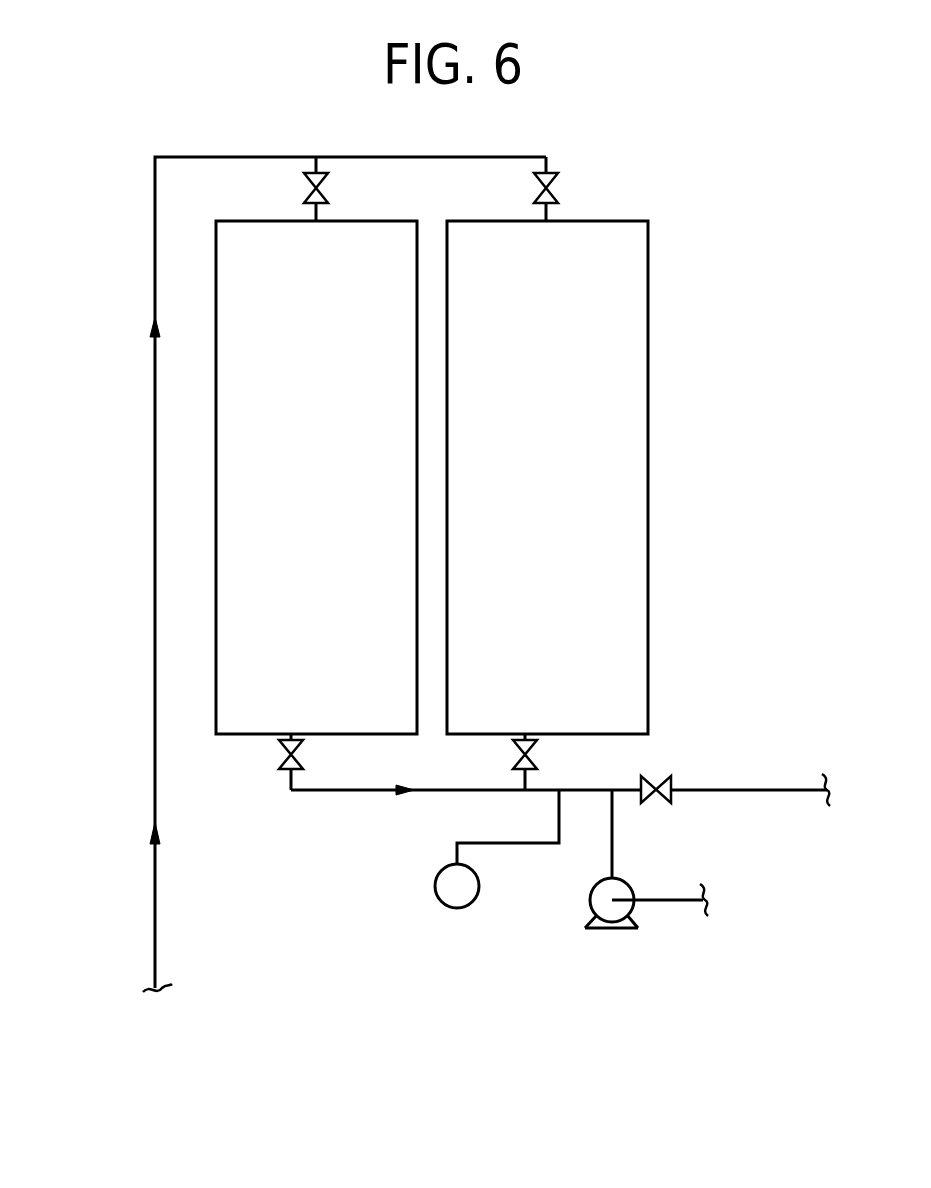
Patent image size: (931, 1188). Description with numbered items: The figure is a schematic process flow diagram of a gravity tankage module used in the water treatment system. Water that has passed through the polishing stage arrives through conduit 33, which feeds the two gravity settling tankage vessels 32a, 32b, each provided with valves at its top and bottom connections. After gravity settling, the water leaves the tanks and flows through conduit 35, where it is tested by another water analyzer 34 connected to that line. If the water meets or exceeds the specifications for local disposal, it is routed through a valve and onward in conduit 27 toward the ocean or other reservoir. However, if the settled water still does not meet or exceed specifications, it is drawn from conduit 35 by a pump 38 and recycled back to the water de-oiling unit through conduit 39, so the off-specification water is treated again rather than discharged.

The conduit 27 is at (749, 790).
The gravity settling tankage 32a is at (316, 473).
The gravity settling tankage 32b is at (547, 473).
The conduit 33 is at (155, 899).
The water analyzer 34 is at (456, 908).
The conduit 35 is at (324, 792).
The pump 38 is at (621, 930).
The conduit 39 is at (672, 899).